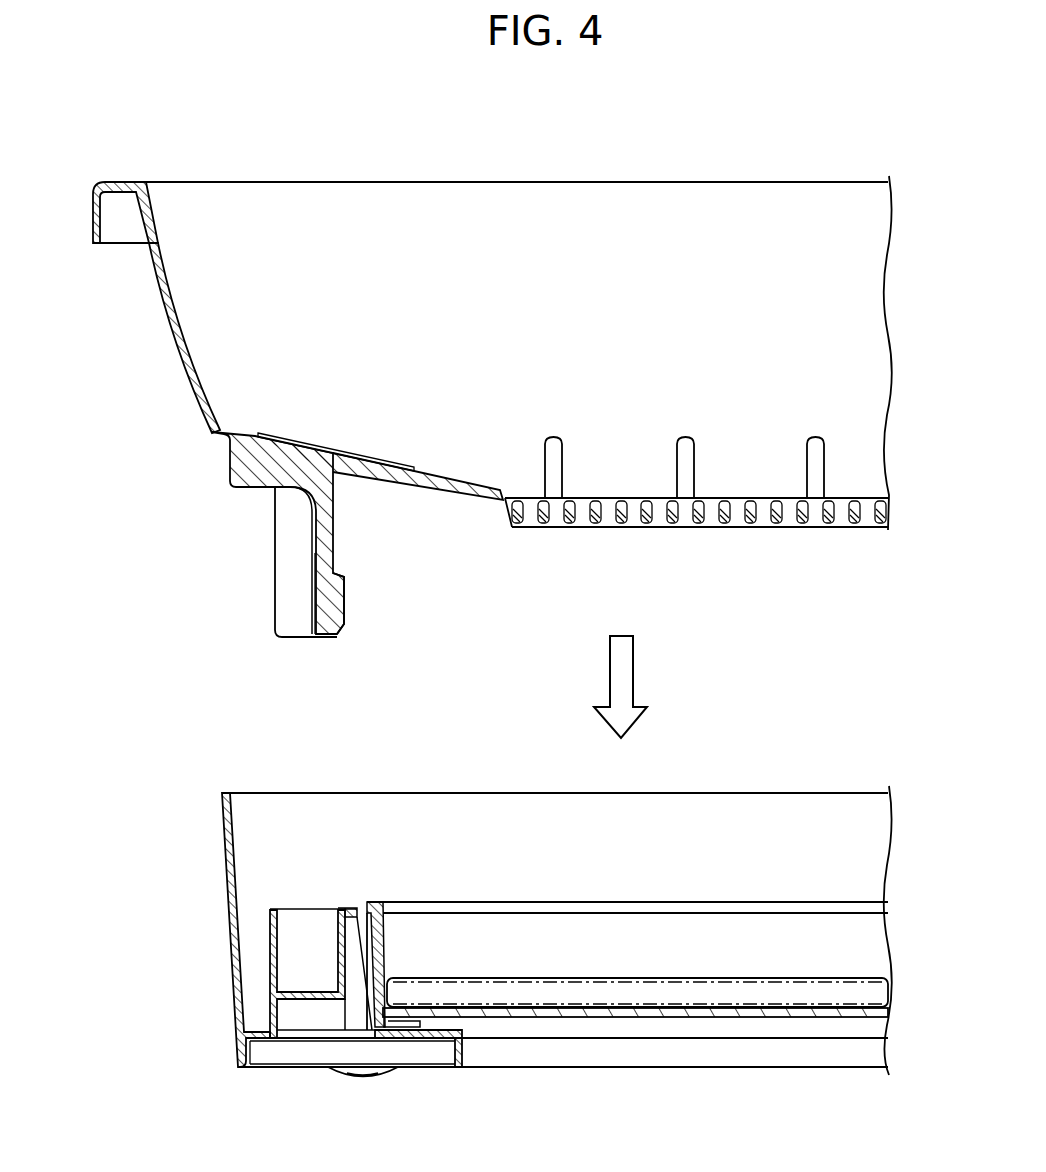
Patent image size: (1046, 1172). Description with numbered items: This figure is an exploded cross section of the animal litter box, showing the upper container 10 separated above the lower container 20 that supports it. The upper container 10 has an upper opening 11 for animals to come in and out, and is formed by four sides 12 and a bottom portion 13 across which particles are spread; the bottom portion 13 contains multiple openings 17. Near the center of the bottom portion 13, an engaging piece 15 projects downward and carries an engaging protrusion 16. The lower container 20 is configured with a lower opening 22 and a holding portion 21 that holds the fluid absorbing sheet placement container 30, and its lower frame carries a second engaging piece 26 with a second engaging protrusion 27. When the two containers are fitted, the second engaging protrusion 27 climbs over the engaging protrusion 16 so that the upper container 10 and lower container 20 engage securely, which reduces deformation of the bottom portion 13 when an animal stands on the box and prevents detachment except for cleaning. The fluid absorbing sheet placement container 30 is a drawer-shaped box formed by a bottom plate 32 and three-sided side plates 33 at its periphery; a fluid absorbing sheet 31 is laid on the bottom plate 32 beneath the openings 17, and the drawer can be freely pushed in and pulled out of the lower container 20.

The upper container 10 is at (162, 305).
The upper opening 11 is at (400, 208).
The sides 12 is at (183, 373).
The bottom portion 13 is at (413, 470).
The engaging piece 15 is at (287, 560).
The engaging protrusion 16 is at (340, 597).
The openings 17 is at (626, 497).
The lower container 20 is at (231, 1022).
The holding portion 21 is at (379, 937).
The lower opening 22 is at (760, 832).
The second engaging piece 26 is at (268, 946).
The second engaging protrusion 27 is at (347, 908).
The fluid absorbing sheet placement container 30 is at (588, 1017).
The fluid absorbing sheet 31 is at (738, 997).
The bottom plate 32 is at (530, 1017).
The side plates 33 is at (385, 952).